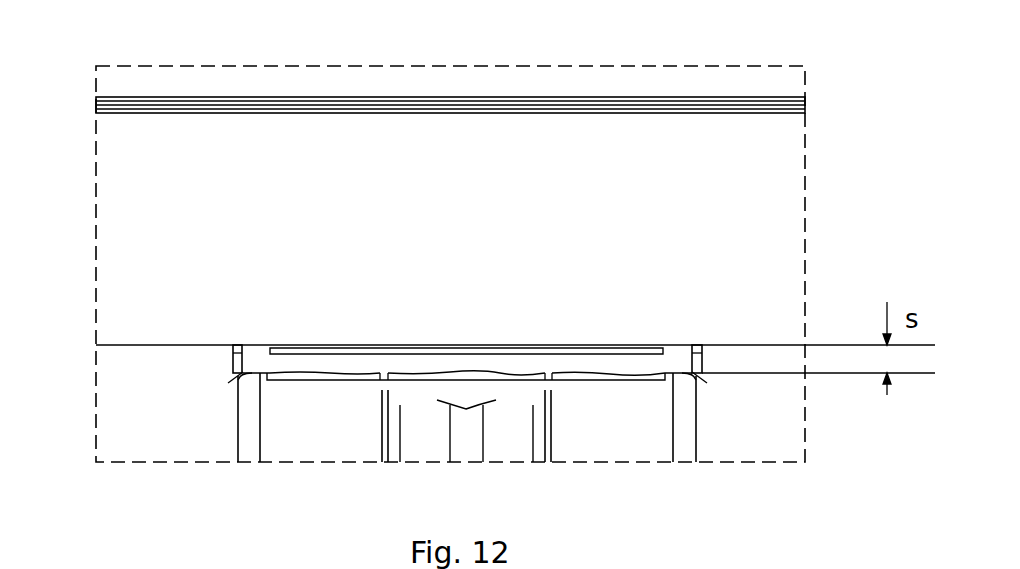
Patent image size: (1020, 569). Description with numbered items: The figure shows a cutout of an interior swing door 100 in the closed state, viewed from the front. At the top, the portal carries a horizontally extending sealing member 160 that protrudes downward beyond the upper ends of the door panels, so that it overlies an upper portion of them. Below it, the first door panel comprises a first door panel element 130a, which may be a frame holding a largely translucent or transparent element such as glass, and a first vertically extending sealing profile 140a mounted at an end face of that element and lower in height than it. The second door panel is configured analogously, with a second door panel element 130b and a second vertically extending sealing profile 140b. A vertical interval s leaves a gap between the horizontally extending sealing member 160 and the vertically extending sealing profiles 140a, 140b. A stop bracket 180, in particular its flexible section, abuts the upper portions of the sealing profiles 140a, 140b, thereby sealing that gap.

The interior swing door 100 is at (125, 40).
The horizontally extending sealing member 160 is at (432, 170).
The first door panel element 130a is at (135, 420).
The second door panel element 130b is at (745, 438).
The first vertically extending sealing profile 140a is at (308, 450).
The second vertically extending sealing profile 140b is at (619, 437).
The stop bracket 180 is at (433, 358).